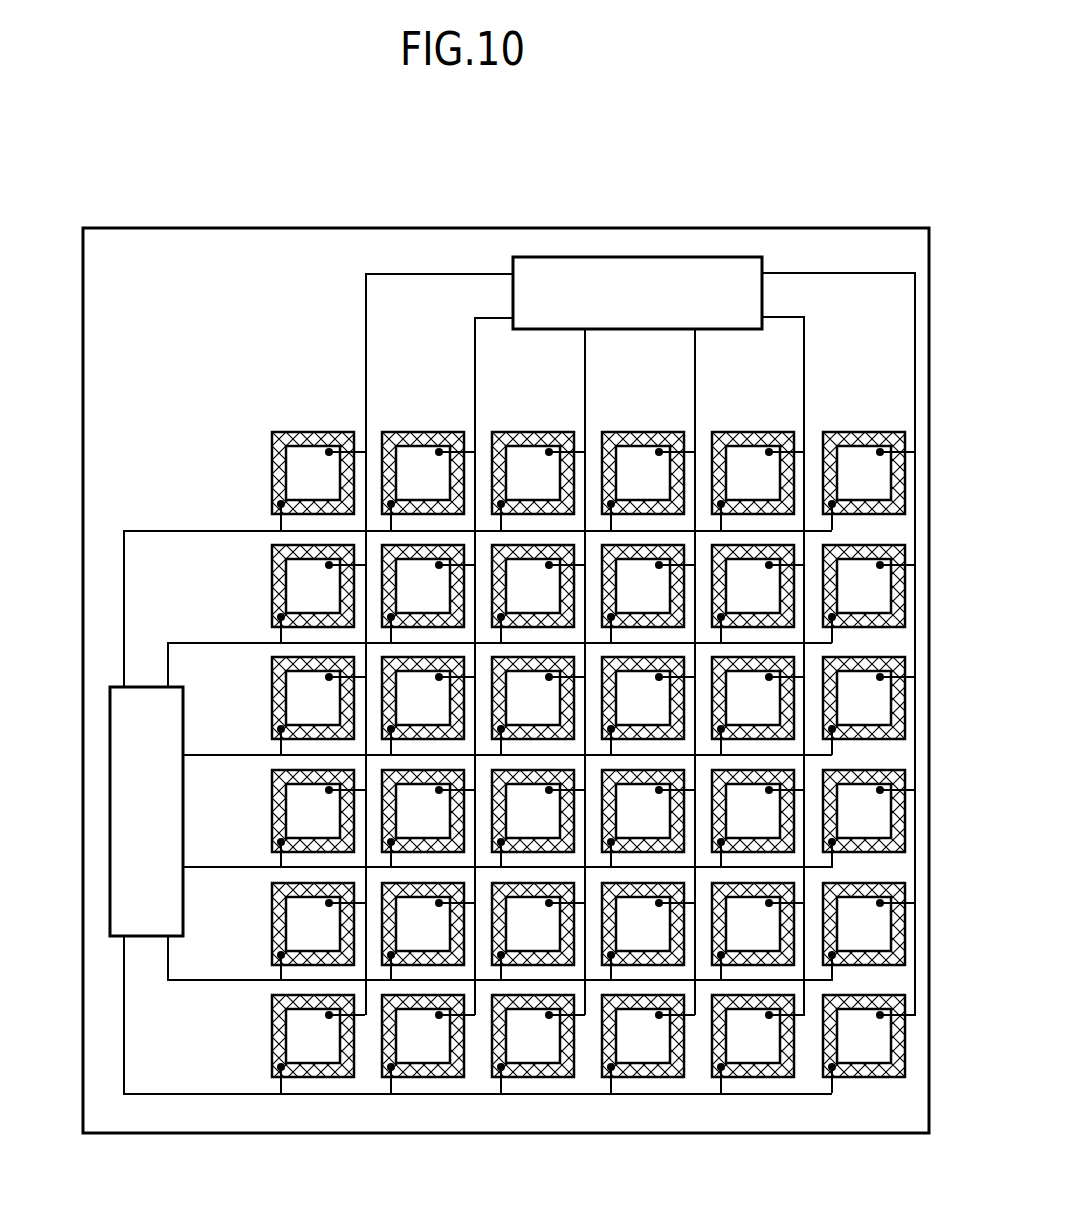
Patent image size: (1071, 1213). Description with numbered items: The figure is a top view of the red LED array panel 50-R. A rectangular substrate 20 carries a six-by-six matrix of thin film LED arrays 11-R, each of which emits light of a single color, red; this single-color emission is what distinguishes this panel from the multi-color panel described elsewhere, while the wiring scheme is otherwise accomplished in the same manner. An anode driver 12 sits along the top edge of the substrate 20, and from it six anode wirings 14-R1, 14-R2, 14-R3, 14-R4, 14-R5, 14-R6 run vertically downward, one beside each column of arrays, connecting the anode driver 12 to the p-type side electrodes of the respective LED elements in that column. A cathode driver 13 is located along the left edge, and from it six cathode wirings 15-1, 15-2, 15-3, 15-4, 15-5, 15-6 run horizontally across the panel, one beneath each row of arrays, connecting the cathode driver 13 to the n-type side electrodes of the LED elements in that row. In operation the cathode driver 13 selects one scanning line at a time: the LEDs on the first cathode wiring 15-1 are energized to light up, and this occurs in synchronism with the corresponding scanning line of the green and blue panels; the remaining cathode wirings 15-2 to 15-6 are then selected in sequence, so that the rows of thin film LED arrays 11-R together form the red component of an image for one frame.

The LED array panel 50-R is at (362, 166).
The substrate 20 is at (172, 228).
The anode driver 12 is at (655, 257).
The cathode driver 13 is at (110, 815).
The anode wiring 14-R1 is at (366, 316).
The anode wiring 14-R2 is at (475, 355).
The anode wiring 14-R3 is at (585, 355).
The anode wiring 14-R4 is at (695, 355).
The anode wiring 14-R5 is at (804, 355).
The anode wiring 14-R6 is at (915, 313).
The cathode wiring 15-1 is at (177, 531).
The cathode wiring 15-2 is at (223, 643).
The cathode wiring 15-3 is at (223, 755).
The cathode wiring 15-4 is at (223, 867).
The cathode wiring 15-5 is at (223, 980).
The cathode wiring 15-6 is at (179, 1094).
The thin film LED array 11-R is at (306, 432).